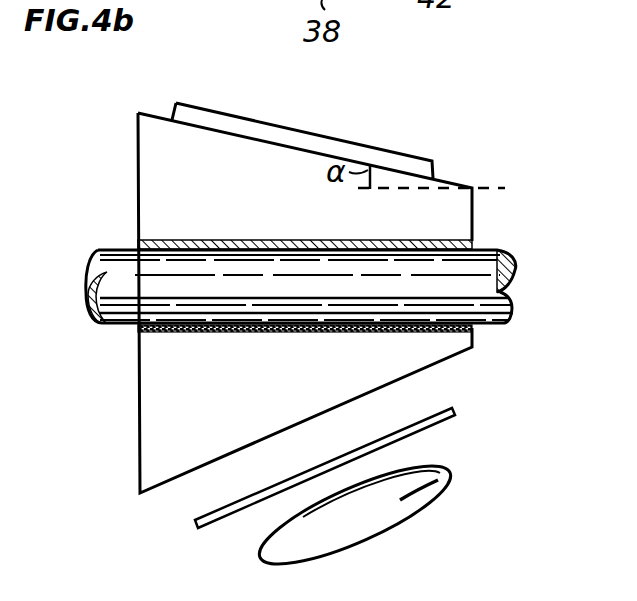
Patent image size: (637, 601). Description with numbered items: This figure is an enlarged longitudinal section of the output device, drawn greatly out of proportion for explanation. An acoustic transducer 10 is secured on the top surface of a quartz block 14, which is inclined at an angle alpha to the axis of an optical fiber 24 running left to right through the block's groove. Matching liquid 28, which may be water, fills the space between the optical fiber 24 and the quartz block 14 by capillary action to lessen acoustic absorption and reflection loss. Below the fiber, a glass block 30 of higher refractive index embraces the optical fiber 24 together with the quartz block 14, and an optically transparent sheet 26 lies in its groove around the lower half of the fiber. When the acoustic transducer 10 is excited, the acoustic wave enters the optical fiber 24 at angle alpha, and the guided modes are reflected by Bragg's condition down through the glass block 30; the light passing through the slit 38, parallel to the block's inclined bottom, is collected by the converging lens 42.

The acoustic transducer 10 is at (215, 116).
The quartz block 14 is at (158, 160).
The optical fiber 24 is at (115, 272).
The optically transparent sheet 26 is at (143, 340).
The matching liquid 28 is at (163, 241).
The glass block 30 is at (168, 385).
The slit 38 is at (449, 410).
The converging lens 42 is at (445, 470).